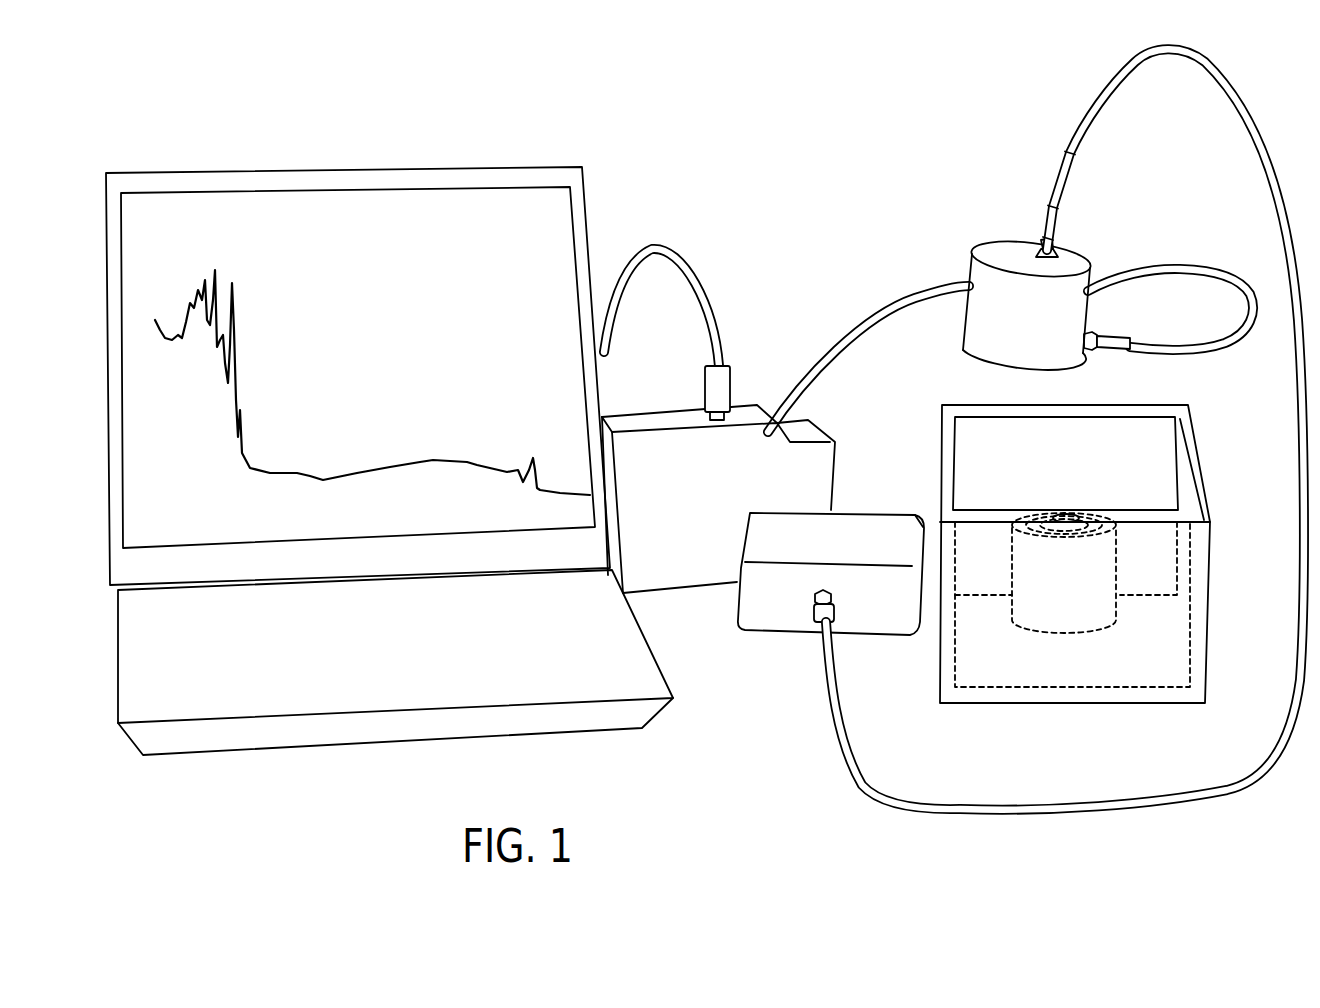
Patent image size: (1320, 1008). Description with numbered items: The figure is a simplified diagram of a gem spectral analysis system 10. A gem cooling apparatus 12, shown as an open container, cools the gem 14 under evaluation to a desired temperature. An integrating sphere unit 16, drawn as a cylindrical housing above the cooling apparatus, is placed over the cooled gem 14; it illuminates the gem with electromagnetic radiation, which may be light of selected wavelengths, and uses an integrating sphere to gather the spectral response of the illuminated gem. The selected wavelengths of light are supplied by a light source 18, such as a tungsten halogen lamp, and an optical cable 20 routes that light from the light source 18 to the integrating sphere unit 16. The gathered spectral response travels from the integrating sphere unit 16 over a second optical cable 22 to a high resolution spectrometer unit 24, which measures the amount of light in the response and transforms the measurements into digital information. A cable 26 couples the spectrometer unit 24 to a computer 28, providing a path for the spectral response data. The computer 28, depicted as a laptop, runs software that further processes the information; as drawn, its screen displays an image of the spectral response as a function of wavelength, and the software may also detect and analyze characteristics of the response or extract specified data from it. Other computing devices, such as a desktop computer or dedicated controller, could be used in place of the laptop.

The gem spectral analysis system 10 is at (636, 123).
The gem cooling apparatus 12 is at (1087, 548).
The gem 14 is at (1066, 535).
The integrating sphere unit 16 is at (1039, 327).
The light source 18 is at (843, 551).
The optical cable 20 is at (1065, 429).
The optical cable 22 is at (1010, 304).
The high resolution spectrometer unit 24 is at (703, 501).
The cable 26 is at (667, 312).
The computer 28 is at (422, 642).